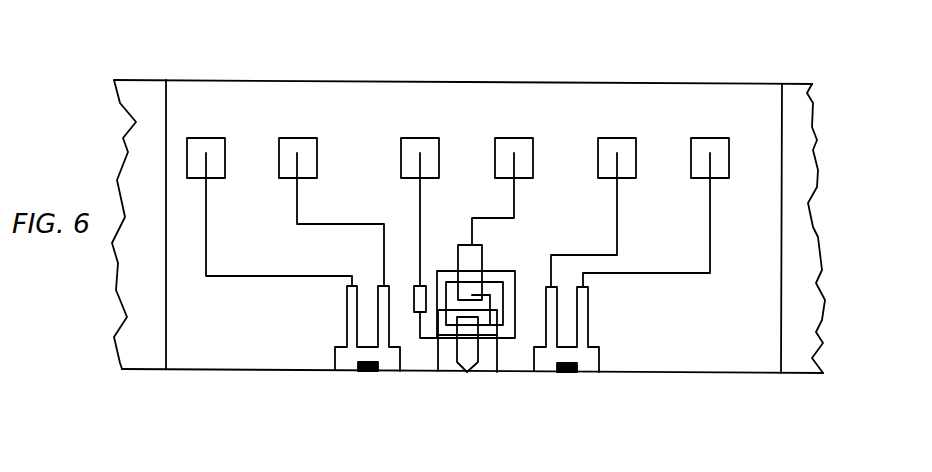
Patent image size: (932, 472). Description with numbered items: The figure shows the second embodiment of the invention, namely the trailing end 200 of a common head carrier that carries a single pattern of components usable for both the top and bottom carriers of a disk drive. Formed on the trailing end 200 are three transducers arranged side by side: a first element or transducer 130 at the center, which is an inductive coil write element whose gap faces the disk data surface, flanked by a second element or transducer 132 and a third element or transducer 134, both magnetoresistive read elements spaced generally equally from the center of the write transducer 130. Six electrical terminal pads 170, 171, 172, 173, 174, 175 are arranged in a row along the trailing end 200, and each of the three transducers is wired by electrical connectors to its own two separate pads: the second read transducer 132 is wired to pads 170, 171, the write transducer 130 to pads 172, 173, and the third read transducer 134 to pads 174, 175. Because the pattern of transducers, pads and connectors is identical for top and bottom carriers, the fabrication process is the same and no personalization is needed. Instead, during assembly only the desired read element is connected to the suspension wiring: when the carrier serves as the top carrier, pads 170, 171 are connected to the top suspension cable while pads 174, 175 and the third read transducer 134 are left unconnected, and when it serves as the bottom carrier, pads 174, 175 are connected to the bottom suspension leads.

The first element or transducer 130 is at (445, 373).
The second element or transducer 132 is at (342, 372).
The third element or transducer 134 is at (583, 372).
The terminal pad 170 is at (218, 153).
The terminal pad 171 is at (311, 156).
The terminal pad 172 is at (425, 155).
The terminal pad 173 is at (520, 155).
The terminal pad 174 is at (633, 154).
The terminal pad 175 is at (724, 157).
The trailing end 200 is at (760, 290).